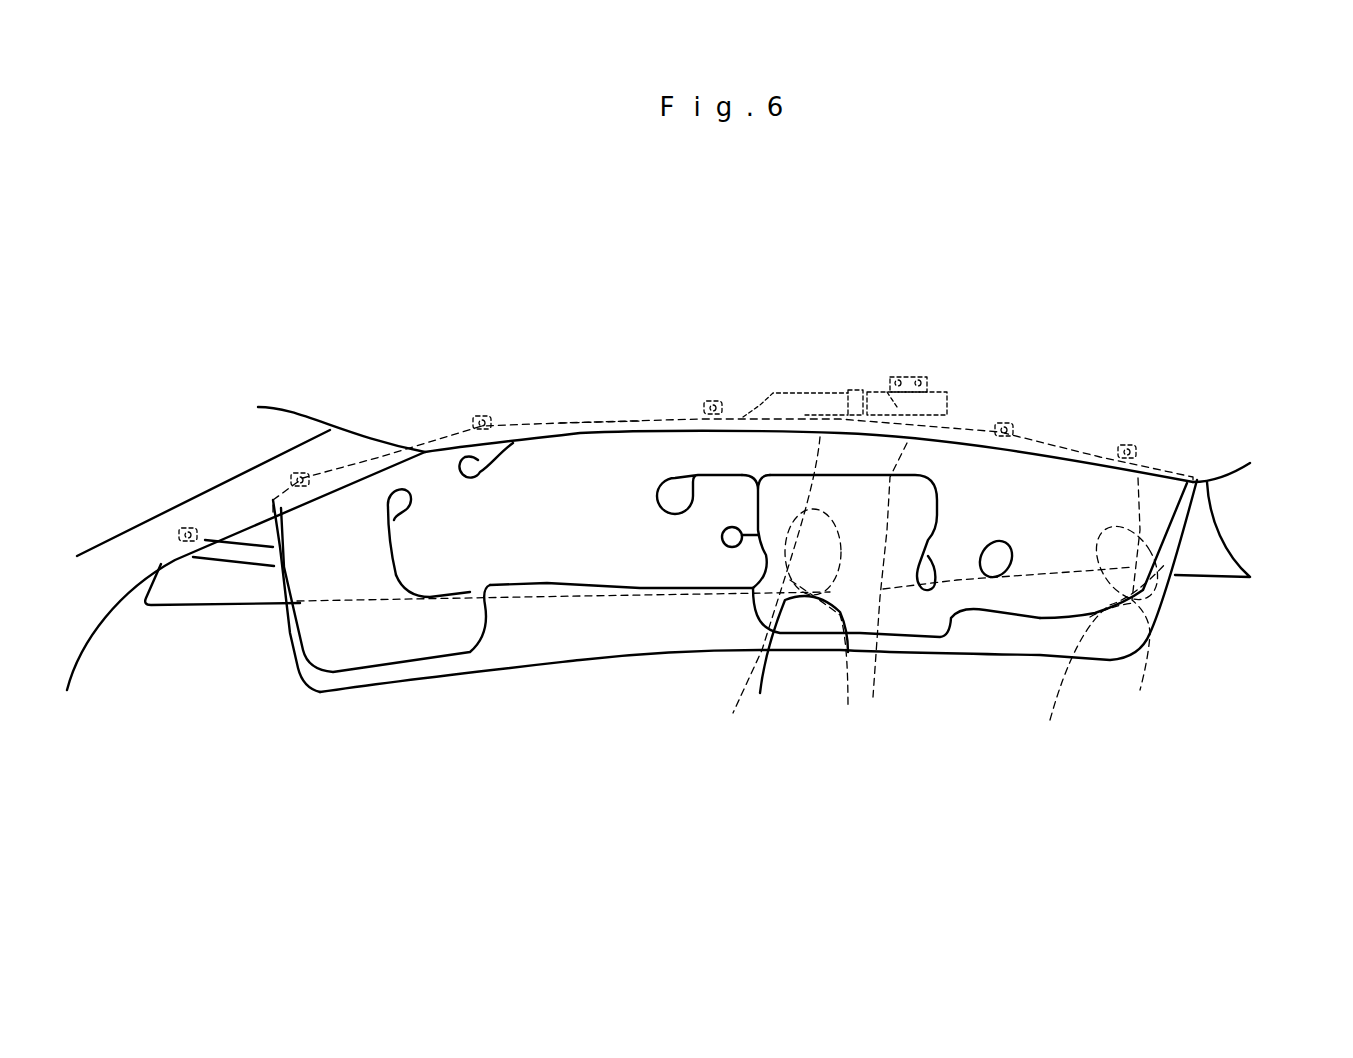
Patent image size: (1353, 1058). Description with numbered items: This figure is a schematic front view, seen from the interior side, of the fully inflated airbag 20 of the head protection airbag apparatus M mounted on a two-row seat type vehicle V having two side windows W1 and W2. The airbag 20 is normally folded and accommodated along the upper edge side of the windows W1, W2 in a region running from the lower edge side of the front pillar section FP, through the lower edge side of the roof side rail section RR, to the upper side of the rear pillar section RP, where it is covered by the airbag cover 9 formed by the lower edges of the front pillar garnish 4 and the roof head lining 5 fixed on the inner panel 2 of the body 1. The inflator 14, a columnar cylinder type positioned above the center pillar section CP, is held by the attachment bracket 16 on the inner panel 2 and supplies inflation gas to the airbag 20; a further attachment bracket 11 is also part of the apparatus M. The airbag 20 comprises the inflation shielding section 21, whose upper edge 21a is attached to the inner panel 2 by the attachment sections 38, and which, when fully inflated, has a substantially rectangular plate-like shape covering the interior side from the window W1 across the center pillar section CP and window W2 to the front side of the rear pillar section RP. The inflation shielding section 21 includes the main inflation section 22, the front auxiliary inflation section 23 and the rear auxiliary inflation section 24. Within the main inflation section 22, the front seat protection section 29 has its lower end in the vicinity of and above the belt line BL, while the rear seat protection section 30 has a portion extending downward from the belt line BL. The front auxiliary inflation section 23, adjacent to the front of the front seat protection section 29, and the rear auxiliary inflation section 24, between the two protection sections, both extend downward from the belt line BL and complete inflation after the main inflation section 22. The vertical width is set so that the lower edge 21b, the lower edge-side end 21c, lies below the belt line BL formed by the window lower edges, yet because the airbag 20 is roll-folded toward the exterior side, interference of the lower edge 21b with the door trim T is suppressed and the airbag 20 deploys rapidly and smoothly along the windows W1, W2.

The body 1 is at (198, 512).
The inner panel 2 is at (674, 420).
The front pillar garnish 4 is at (117, 545).
The roof head lining 5 is at (550, 415).
The airbag cover 9 is at (162, 567).
The attachment bracket 11 is at (477, 416).
The inflator 14 is at (945, 368).
The attachment bracket 16 is at (890, 385).
The airbag 20 is at (320, 686).
The inflation shielding section 21 is at (324, 670).
The upper edge 21a is at (598, 417).
The lower edge 21b is at (758, 642).
The lower edge-side end 21c is at (463, 668).
The main inflation section 22 is at (645, 612).
The front auxiliary inflation section 23 is at (305, 700).
The rear auxiliary inflation section 24 is at (873, 637).
The front seat protection section 29 is at (715, 601).
The rear seat protection section 30 is at (1059, 637).
The attachment section 38 is at (722, 395).
The belt line BL is at (386, 602).
The center pillar section CP is at (897, 530).
The front pillar section FP is at (239, 452).
The head protection airbag apparatus M is at (1175, 425).
The rear pillar section RP is at (1239, 524).
The roof side rail section RR is at (1067, 437).
The door trim T is at (220, 627).
The vehicle V is at (139, 767).
The window W1 is at (313, 587).
The window W2 is at (957, 572).